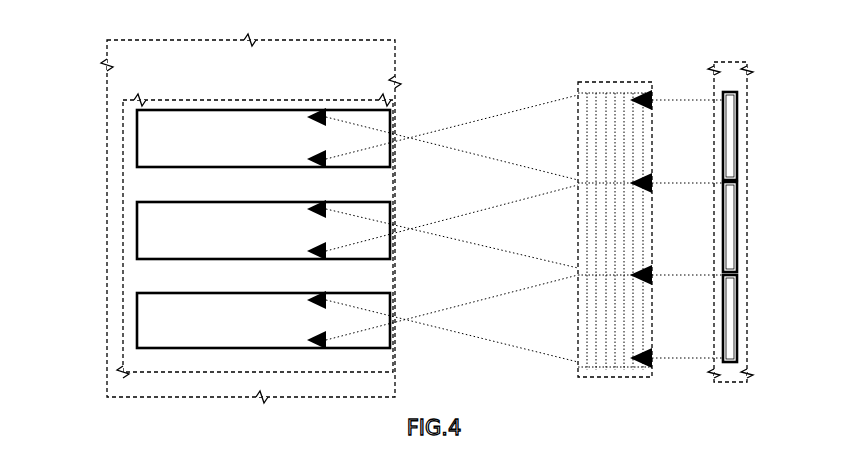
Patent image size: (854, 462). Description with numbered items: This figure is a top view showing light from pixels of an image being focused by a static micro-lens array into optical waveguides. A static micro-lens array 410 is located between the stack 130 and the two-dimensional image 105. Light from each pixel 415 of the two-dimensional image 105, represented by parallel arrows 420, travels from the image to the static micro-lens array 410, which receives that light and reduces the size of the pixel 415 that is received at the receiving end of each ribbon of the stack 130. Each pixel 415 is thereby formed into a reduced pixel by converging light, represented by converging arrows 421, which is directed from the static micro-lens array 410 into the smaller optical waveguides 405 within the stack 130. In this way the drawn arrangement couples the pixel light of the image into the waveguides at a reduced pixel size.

The two-dimensional image 105 is at (732, 62).
The stack 130 is at (107, 102).
The optical waveguides 405 is at (152, 135).
The static micro-lens array 410 is at (576, 90).
The pixel 415 is at (733, 122).
The parallel arrows 420 is at (672, 100).
The converging arrows 421 is at (445, 130).